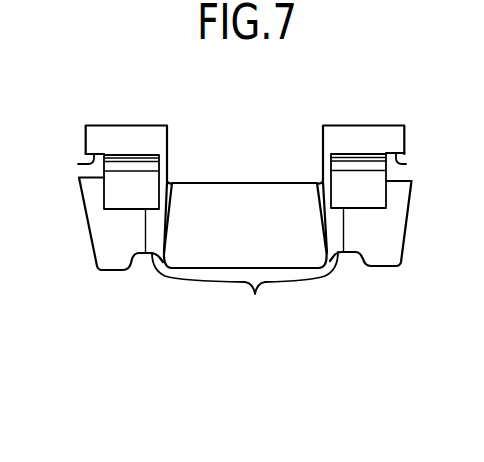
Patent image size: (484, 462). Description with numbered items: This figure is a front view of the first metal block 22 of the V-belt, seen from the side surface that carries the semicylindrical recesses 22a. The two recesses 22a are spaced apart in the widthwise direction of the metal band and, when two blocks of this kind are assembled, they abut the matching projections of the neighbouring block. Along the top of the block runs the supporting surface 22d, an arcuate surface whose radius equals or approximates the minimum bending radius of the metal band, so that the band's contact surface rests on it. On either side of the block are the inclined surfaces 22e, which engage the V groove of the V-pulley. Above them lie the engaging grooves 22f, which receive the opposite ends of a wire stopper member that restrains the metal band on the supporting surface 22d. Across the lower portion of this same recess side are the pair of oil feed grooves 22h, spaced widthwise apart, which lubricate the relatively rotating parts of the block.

The first metal block 22 is at (224, 148).
The semicylindrical recesses 22a is at (131, 167).
The supporting surface 22d is at (257, 183).
The inclined surfaces 22e is at (88, 222).
The engaging grooves 22f is at (80, 164).
The oil feed grooves 22h is at (245, 289).